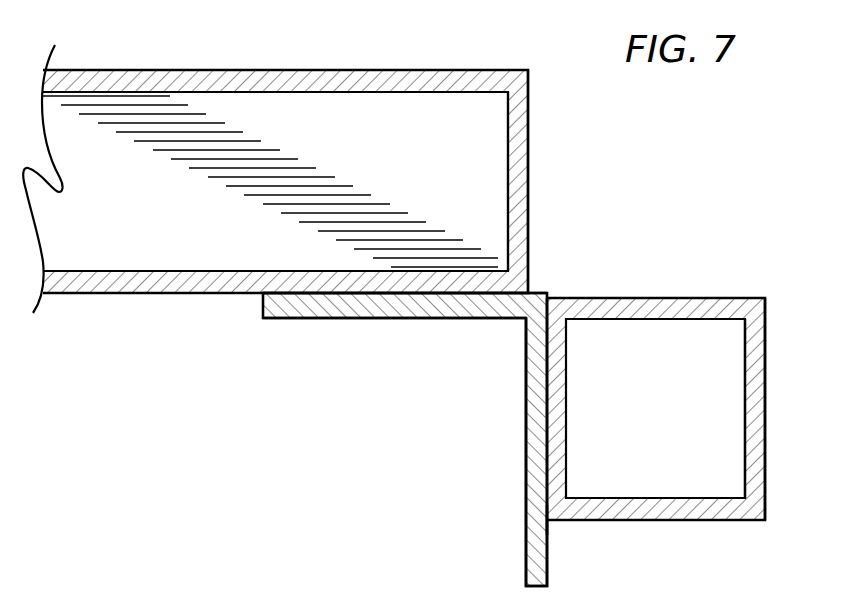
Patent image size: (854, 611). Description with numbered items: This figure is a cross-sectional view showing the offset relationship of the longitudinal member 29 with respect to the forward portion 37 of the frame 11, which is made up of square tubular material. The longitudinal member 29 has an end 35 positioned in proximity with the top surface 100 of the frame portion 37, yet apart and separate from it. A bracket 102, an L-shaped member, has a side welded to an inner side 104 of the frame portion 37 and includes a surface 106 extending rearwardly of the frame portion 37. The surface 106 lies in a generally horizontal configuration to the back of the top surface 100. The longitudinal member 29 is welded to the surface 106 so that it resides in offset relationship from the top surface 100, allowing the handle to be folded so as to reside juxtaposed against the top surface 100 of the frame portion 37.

The frame 11 is at (717, 281).
The longitudinal member 29 is at (198, 70).
The end 35 is at (528, 192).
The forward portion 37 is at (765, 390).
The top surface 100 is at (585, 297).
The bracket 102 is at (525, 532).
The inner side 104 is at (547, 520).
The surface 106 is at (400, 317).